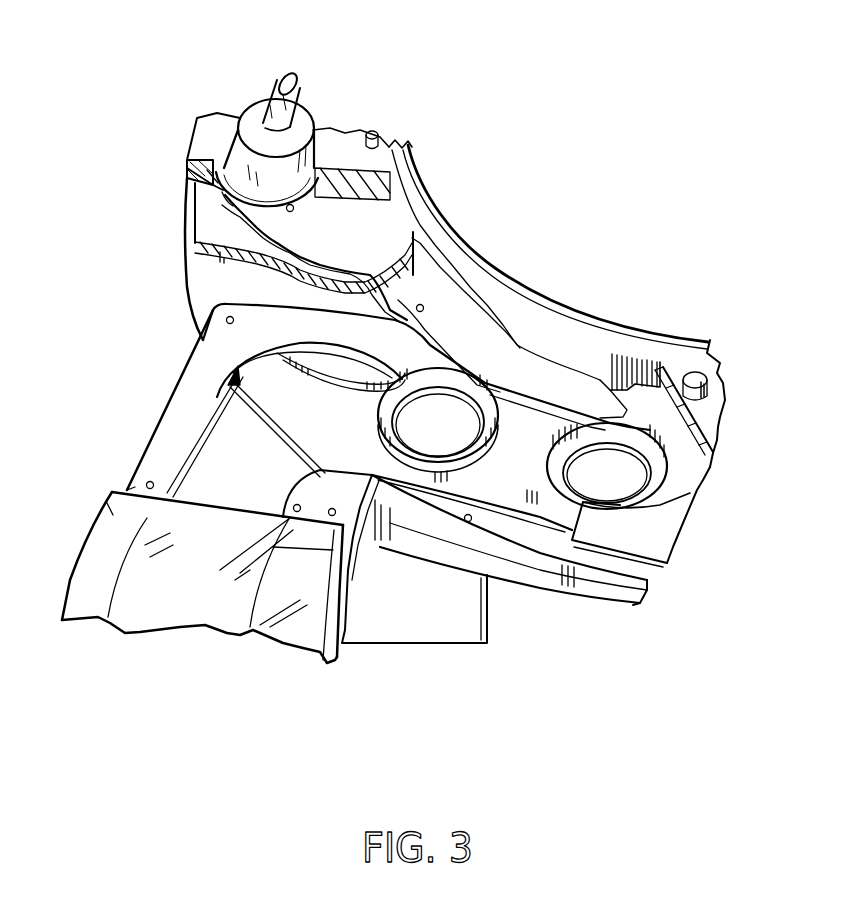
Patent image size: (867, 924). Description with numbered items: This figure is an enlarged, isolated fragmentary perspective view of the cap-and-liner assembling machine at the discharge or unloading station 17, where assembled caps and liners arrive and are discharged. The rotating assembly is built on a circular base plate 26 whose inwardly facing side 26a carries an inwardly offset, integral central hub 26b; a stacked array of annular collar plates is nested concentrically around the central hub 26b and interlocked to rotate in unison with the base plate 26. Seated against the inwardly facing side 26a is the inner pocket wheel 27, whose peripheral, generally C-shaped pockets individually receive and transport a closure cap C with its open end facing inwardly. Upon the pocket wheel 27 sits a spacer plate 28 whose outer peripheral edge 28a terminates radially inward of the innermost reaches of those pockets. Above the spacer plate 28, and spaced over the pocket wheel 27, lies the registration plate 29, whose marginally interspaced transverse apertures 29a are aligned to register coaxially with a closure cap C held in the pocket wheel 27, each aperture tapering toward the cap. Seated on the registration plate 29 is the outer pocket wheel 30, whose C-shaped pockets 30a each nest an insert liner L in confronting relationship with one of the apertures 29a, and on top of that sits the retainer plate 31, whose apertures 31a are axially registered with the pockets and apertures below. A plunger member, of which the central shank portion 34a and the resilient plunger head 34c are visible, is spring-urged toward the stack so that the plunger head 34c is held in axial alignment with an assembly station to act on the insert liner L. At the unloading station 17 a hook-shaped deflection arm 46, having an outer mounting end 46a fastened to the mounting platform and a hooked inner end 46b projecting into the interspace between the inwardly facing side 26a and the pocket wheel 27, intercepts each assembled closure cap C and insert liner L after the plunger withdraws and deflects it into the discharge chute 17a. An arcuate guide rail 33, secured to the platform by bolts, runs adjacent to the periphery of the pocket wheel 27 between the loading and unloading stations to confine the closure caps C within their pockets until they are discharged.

The unloading station 17 is at (197, 343).
The discharge chute 17a is at (93, 608).
The circular base plate 26 is at (185, 268).
The inwardly facing side 26a is at (213, 258).
The central hub 26b is at (507, 293).
The inner pocket wheel 27 is at (353, 272).
The spacer plate 28 is at (557, 395).
The outer peripheral edge 28a is at (523, 400).
The registration plate 29 is at (215, 220).
The transverse apertures 29a is at (230, 203).
The outer pocket wheel 30 is at (300, 210).
The C-shaped pockets 30a is at (300, 216).
The retainer plate 31 is at (218, 128).
The apertures 31a is at (222, 187).
The arcuate guide rail 33 is at (593, 560).
The central shank portion 34a is at (303, 93).
The plunger head 34c is at (298, 130).
The deflection arm 46 is at (177, 440).
The outer mounting end 46a is at (398, 342).
The hooked inner end 46b is at (135, 487).
The closure cap C is at (395, 400).
The insert liner L is at (428, 445).